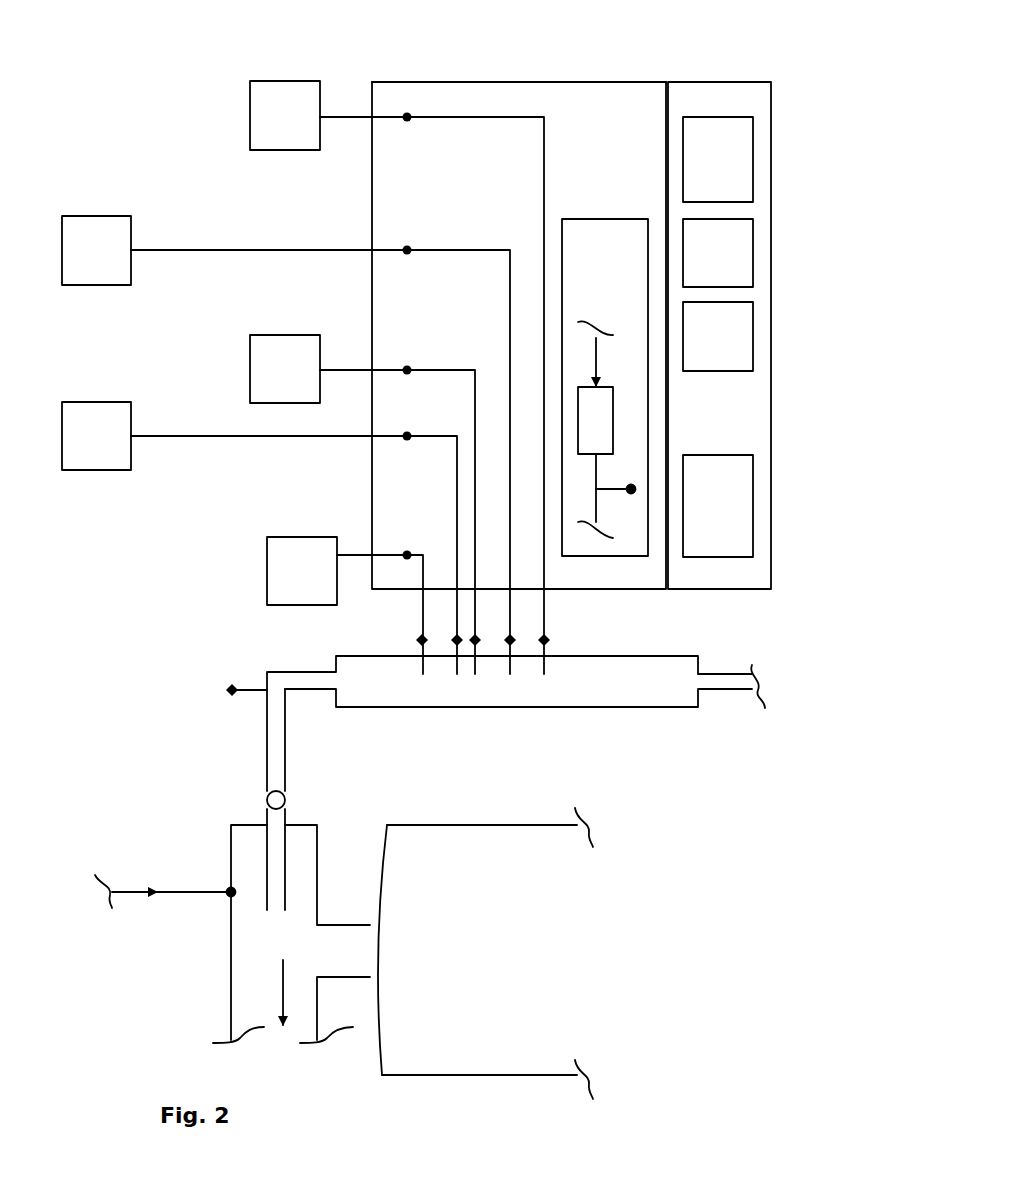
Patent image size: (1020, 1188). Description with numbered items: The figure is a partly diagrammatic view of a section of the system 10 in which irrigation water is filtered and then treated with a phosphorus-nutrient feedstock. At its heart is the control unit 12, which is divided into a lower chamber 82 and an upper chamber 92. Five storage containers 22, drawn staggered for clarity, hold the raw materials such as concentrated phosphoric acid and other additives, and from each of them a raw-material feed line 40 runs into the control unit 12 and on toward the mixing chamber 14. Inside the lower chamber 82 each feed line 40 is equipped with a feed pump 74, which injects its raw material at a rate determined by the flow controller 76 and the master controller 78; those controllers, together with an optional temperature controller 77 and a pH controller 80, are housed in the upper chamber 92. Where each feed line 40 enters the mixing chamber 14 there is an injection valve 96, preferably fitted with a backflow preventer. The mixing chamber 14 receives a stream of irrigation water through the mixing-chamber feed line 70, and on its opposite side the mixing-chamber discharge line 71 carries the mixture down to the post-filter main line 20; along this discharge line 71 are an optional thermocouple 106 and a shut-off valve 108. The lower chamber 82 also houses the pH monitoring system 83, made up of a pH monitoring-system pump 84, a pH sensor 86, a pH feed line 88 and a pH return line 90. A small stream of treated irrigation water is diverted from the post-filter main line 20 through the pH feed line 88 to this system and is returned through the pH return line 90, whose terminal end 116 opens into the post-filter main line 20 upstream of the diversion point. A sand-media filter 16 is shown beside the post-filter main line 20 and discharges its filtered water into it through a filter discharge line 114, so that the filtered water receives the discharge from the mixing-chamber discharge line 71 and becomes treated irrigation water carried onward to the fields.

The system 10 is at (128, 96).
The control unit 12 is at (519, 335).
The mixing chamber 14 is at (516, 682).
The sand-media filter 16 is at (485, 953).
The post-filter main line 20 is at (231, 962).
The storage container 22 is at (199, 343).
The raw-material feed line 40 is at (340, 115).
The mixing-chamber feed line 70 is at (738, 672).
The mixing-chamber discharge line 71 is at (298, 672).
The feed pump 74 is at (407, 370).
The flow controller 76 is at (718, 159).
The temperature controller 77 is at (718, 253).
The master controller 78 is at (718, 506).
The pH controller 80 is at (718, 336).
The lower chamber 82 is at (597, 82).
The pH monitoring system 83 is at (605, 387).
The pH monitoring-system pump 84 is at (613, 422).
The pH sensor 86 is at (631, 489).
The pH feed line 88 is at (597, 352).
The pH return line 90 is at (597, 507).
The upper chamber 92 is at (733, 82).
The injection valve 96 is at (416, 640).
The mixing-chamber discharge-line thermocouple 106 is at (215, 688).
The mixing-chamber discharge-line shut-off valve 108 is at (265, 792).
The filter discharge line 114 is at (337, 925).
The terminal end of the pH return line 116 is at (195, 892).